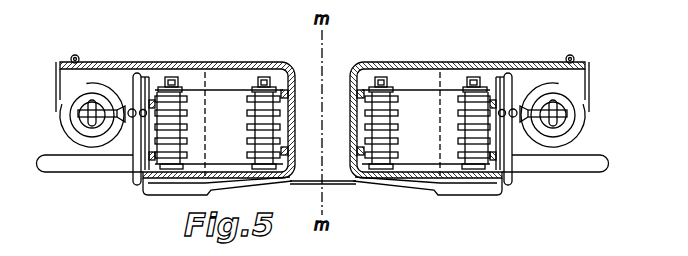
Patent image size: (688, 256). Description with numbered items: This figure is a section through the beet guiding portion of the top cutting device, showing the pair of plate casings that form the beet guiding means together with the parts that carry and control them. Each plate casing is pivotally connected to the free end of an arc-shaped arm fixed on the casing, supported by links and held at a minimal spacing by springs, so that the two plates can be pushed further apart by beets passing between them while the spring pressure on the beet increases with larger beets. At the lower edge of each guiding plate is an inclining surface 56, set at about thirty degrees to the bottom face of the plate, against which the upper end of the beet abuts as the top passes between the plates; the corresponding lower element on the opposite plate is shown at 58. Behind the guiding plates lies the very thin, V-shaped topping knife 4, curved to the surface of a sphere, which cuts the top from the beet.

The topping knife 4 is at (329, 180).
The inclining surface 56 is at (283, 176).
The bent plate 58 is at (346, 180).